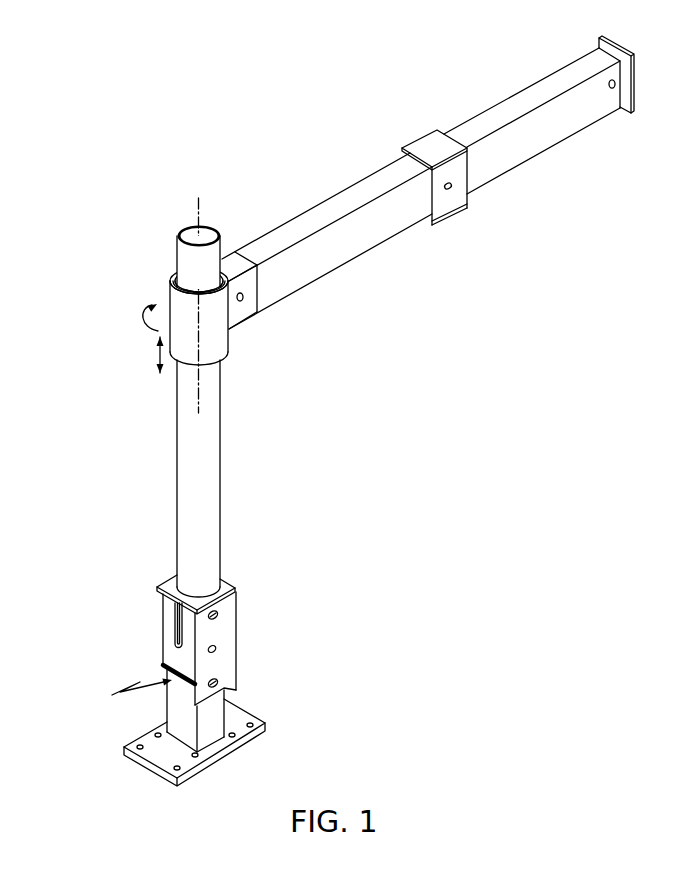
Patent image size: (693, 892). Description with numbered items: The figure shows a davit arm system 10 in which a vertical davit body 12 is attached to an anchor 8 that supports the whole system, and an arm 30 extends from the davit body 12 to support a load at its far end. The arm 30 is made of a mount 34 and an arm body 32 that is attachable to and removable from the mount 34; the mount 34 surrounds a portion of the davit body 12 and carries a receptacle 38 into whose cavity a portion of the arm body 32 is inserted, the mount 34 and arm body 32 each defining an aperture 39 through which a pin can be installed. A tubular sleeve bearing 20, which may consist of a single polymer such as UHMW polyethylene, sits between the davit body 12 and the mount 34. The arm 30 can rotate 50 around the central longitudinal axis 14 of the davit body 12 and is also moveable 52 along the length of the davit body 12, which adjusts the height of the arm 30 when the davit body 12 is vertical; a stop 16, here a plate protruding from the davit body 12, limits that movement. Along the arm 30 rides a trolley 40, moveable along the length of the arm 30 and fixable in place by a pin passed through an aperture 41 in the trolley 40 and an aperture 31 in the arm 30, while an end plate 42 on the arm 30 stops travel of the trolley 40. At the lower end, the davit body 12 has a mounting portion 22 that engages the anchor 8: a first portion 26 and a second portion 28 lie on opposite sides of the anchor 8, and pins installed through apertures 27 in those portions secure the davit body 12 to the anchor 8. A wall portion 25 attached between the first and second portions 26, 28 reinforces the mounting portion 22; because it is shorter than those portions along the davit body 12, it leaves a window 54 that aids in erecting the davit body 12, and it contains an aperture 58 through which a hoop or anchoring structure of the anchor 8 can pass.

The anchor 8 is at (211, 742).
The davit arm system 10 is at (122, 426).
The davit body 12 is at (210, 478).
The central longitudinal axis 14 is at (197, 206).
The stop 16 is at (226, 583).
The bearing 20 is at (177, 272).
The mounting portion 22 is at (223, 670).
The wall portion 25 is at (193, 650).
The first portion 26 is at (217, 665).
The apertures 27 is at (219, 615).
The second portion 28 is at (163, 672).
The arm 30 is at (421, 197).
The aperture 31 is at (612, 90).
The arm body 32 is at (298, 283).
The mount 34 is at (196, 301).
The receptacle 38 is at (260, 275).
The aperture 39 is at (240, 292).
The trolley 40 is at (452, 189).
The aperture 41 is at (455, 186).
The end plate 42 is at (632, 104).
The rotation 50 is at (142, 320).
The movement along davit body 52 is at (156, 362).
The window 54 is at (129, 694).
The aperture 58 is at (176, 620).